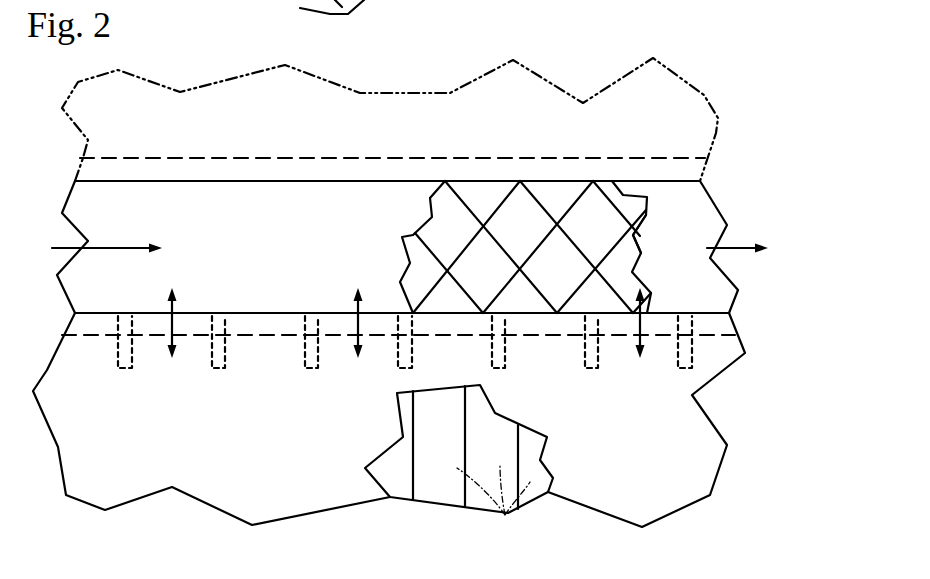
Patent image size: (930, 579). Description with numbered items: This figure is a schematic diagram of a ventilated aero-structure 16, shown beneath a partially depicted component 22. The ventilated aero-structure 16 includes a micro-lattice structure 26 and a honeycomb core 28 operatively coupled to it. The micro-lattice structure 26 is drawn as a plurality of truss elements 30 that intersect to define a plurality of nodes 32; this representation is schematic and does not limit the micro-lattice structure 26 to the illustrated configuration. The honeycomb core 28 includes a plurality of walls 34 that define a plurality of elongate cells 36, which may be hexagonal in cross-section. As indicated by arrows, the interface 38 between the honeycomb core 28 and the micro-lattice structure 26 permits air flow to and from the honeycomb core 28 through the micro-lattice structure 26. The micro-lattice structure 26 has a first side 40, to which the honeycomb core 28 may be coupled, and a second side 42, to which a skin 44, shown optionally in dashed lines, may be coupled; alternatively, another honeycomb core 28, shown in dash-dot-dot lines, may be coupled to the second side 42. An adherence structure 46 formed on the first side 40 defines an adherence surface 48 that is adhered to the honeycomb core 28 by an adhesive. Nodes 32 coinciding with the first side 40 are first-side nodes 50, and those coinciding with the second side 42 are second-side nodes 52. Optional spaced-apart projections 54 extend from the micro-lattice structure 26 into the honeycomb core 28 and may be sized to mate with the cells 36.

The ventilated aero-structure 16 is at (766, 53).
The upper component 22 is at (412, 0).
The micro-lattice structure 26 is at (713, 195).
The honeycomb core 28 is at (708, 97).
The truss elements 30 is at (455, 225).
The nodes 32 is at (633, 236).
The walls 34 is at (318, 92).
The elongate cells 36 is at (428, 104).
The interface 38 is at (75, 313).
The first side 40 is at (572, 313).
The second side 42 is at (473, 181).
The skin 44 is at (110, 158).
The adherence structure 46 is at (265, 158).
The adherence surface 48 is at (352, 158).
The first-side nodes 50 is at (557, 313).
The second-side nodes 52 is at (520, 181).
The projections 54 is at (118, 355).